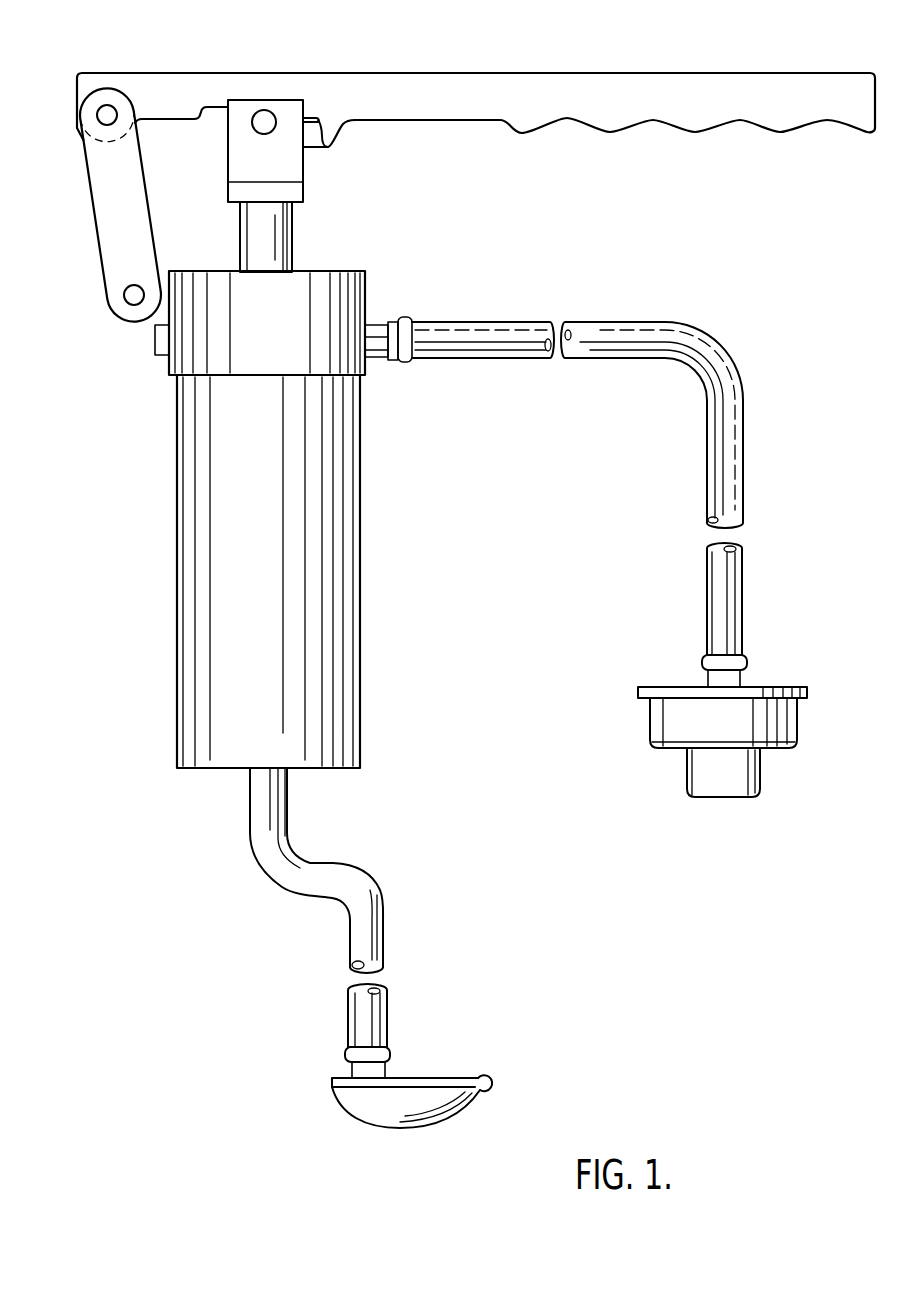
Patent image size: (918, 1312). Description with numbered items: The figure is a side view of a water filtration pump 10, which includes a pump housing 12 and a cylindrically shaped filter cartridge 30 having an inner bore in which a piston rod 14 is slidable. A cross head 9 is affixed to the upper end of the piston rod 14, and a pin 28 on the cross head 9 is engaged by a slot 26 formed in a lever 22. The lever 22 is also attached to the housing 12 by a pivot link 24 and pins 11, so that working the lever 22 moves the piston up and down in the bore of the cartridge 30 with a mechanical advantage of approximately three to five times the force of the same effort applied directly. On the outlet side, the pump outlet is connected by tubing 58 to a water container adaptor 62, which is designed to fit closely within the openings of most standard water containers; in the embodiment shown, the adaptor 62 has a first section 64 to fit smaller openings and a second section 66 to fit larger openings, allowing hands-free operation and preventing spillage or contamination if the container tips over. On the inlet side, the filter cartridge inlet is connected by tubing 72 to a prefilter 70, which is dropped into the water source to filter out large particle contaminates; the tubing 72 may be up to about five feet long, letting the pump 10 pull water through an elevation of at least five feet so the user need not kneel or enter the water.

The cross head 9 is at (290, 165).
The water filtration pump 10 is at (149, 585).
The pins 11 is at (110, 106).
The pump housing 12 is at (367, 297).
The piston rod 14 is at (292, 240).
The lever 22 is at (524, 78).
The pivot link 24 is at (95, 233).
The slot 26 is at (325, 147).
The pin 28 is at (261, 128).
The filter cartridge 30 is at (345, 620).
The tubing 58 is at (707, 327).
The water container adaptor 62 is at (797, 732).
The first section 64 is at (687, 772).
The second section 66 is at (650, 712).
The prefilter 70 is at (340, 1098).
The tubing 72 is at (338, 907).